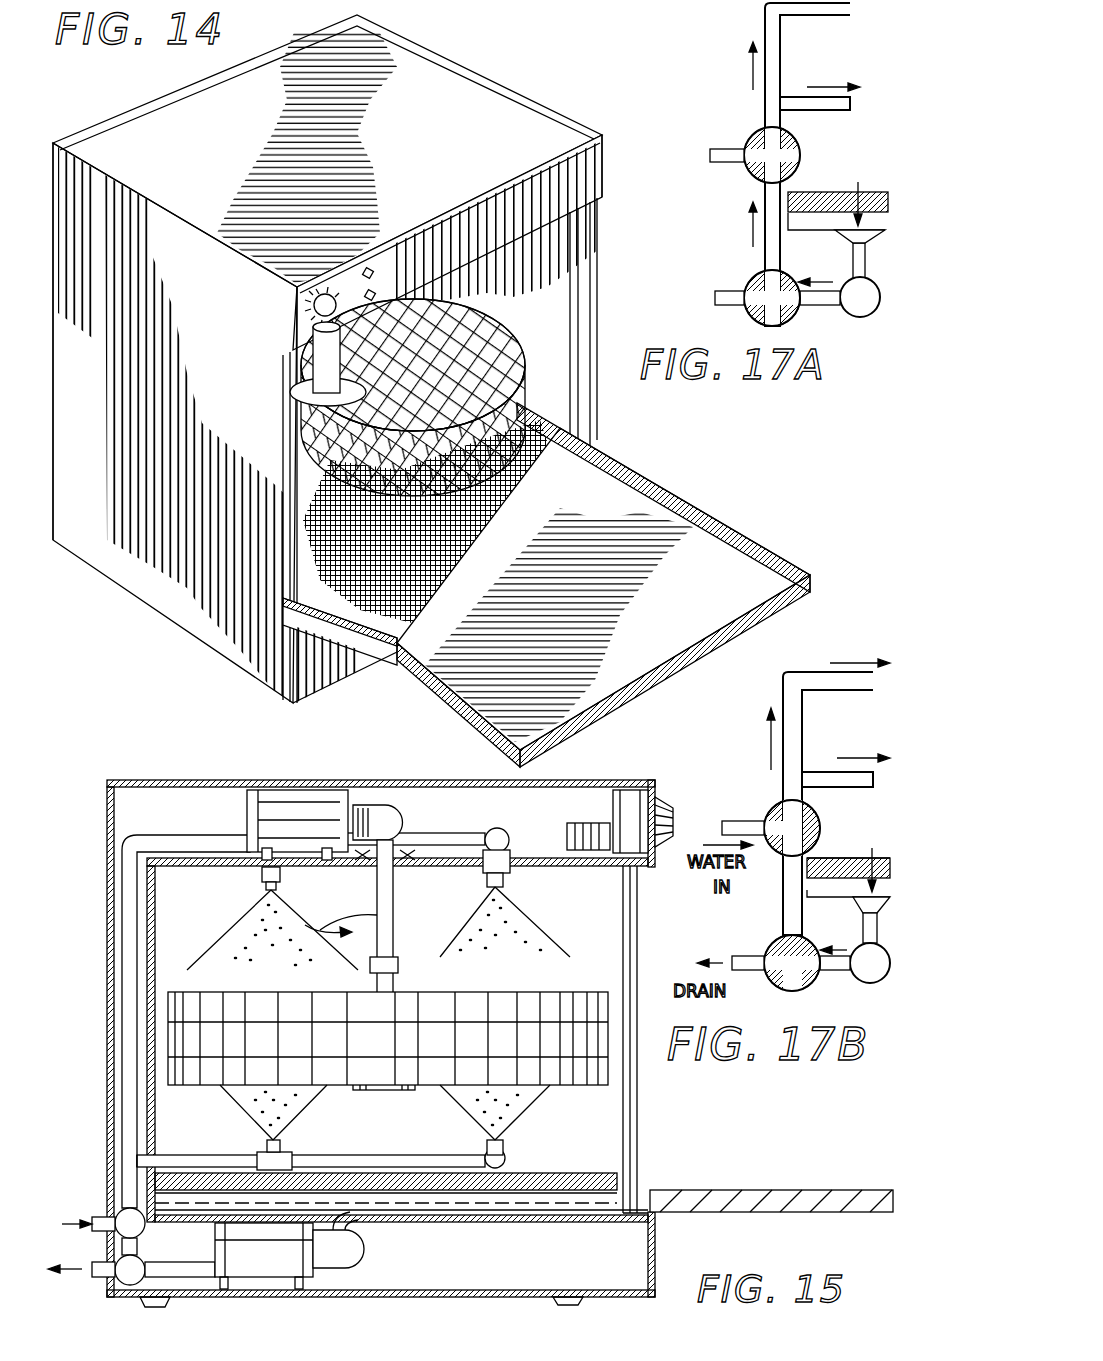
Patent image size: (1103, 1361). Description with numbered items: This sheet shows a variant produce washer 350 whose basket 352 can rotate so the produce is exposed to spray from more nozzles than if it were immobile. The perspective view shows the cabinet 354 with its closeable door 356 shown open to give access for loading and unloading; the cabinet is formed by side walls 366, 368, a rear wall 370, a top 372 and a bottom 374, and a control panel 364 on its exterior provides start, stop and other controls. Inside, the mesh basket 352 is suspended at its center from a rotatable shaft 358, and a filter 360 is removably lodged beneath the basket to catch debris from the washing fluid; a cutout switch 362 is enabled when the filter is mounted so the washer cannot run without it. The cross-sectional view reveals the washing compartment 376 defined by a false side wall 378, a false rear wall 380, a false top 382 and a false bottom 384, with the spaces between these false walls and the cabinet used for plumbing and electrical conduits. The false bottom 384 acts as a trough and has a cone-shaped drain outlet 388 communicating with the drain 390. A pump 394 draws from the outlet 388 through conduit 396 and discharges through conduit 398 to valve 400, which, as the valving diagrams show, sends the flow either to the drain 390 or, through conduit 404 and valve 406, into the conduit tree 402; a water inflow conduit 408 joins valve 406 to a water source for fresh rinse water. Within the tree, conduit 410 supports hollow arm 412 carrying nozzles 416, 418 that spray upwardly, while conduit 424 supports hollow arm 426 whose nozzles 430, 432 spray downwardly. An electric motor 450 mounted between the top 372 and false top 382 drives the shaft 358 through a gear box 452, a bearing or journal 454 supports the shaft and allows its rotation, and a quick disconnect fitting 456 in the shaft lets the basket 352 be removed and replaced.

In FIG. 14, the produce washer 350 is at (130, 625).
In FIG. 14, the basket 352 is at (520, 352).
In FIG. 15, the basket 352 is at (548, 992).
In FIG. 14, the cabinet 354 is at (566, 119).
In FIG. 15, the cabinet 354 is at (234, 772).
In FIG. 14, the door 356 is at (757, 552).
In FIG. 15, the door 356 is at (730, 1190).
In FIG. 14, the rotatable shaft 358 is at (318, 372).
In FIG. 15, the rotatable shaft 358 is at (395, 982).
In FIG. 14, the filter 360 is at (622, 480).
In FIG. 17B, the filter 360 is at (848, 840).
In FIG. 15, the filter 360 is at (600, 1173).
In FIG. 15, the cutout switch 362 is at (137, 1158).
In FIG. 14, the control panel 364 is at (605, 170).
In FIG. 15, the control panel 364 is at (662, 788).
In FIG. 14, the side wall 366 is at (97, 550).
In FIG. 14, the side wall 368 is at (580, 263).
In FIG. 15, the rear wall 370 is at (107, 900).
In FIG. 14, the top 372 is at (517, 105).
In FIG. 15, the top 372 is at (602, 782).
In FIG. 15, the bottom 374 is at (462, 1290).
In FIG. 15, the washing compartment 376 is at (605, 930).
In FIG. 14, the false side wall 378 is at (562, 372).
In FIG. 15, the false rear wall 380 is at (150, 960).
In FIG. 15, the false top 382 is at (560, 868).
In FIG. 15, the false bottom 384 is at (550, 1225).
In FIG. 17A, the drain outlet 388 is at (838, 193).
In FIG. 17B, the drain outlet 388 is at (850, 905).
In FIG. 15, the drain outlet 388 is at (372, 1225).
In FIG. 17A, the drain 390 is at (728, 307).
In FIG. 17B, the drain 390 is at (735, 962).
In FIG. 15, the drain 390 is at (92, 1278).
In FIG. 17A, the pump 394 is at (872, 316).
In FIG. 17B, the pump 394 is at (880, 984).
In FIG. 15, the pump 394 is at (318, 1258).
In FIG. 17A, the conduit 396 is at (853, 262).
In FIG. 17B, the conduit 396 is at (863, 930).
In FIG. 15, the conduit 396 is at (365, 1260).
In FIG. 17A, the conduit 398 is at (818, 310).
In FIG. 17B, the conduit 398 is at (820, 990).
In FIG. 15, the conduit 398 is at (210, 1268).
In FIG. 17A, the valve 400 is at (752, 286).
In FIG. 17B, the valve 400 is at (770, 946).
In FIG. 15, the valve 400 is at (147, 1268).
In FIG. 17A, the conduit tree 402 is at (754, 28).
In FIG. 17B, the conduit tree 402 is at (778, 695).
In FIG. 15, the conduit tree 402 is at (119, 1078).
In FIG. 17B, the conduit 404 is at (783, 900).
In FIG. 15, the conduit 404 is at (122, 1185).
In FIG. 17A, the valve 406 is at (752, 134).
In FIG. 17B, the valve 406 is at (776, 802).
In FIG. 15, the valve 406 is at (160, 1213).
In FIG. 17A, the water inflow conduit 408 is at (722, 150).
In FIG. 17B, the water inflow conduit 408 is at (752, 822).
In FIG. 15, the water inflow conduit 408 is at (110, 1217).
In FIG. 17A, the conduit 410 is at (840, 110).
In FIG. 17B, the conduit 410 is at (822, 772).
In FIG. 15, the hollow arm 412 is at (380, 1156).
In FIG. 15, the nozzle 416 is at (282, 1146).
In FIG. 15, the nozzle 418 is at (503, 1148).
In FIG. 17A, the conduit 424 is at (822, 17).
In FIG. 17B, the conduit 424 is at (810, 672).
In FIG. 15, the hollow arm 426 is at (437, 832).
In FIG. 15, the nozzle 430 is at (262, 875).
In FIG. 15, the nozzle 432 is at (510, 872).
In FIG. 15, the electric motor 450 is at (290, 796).
In FIG. 15, the gear box 452 is at (378, 805).
In FIG. 15, the bearing or journal 454 is at (430, 870).
In FIG. 15, the quick disconnect fitting 456 is at (405, 962).